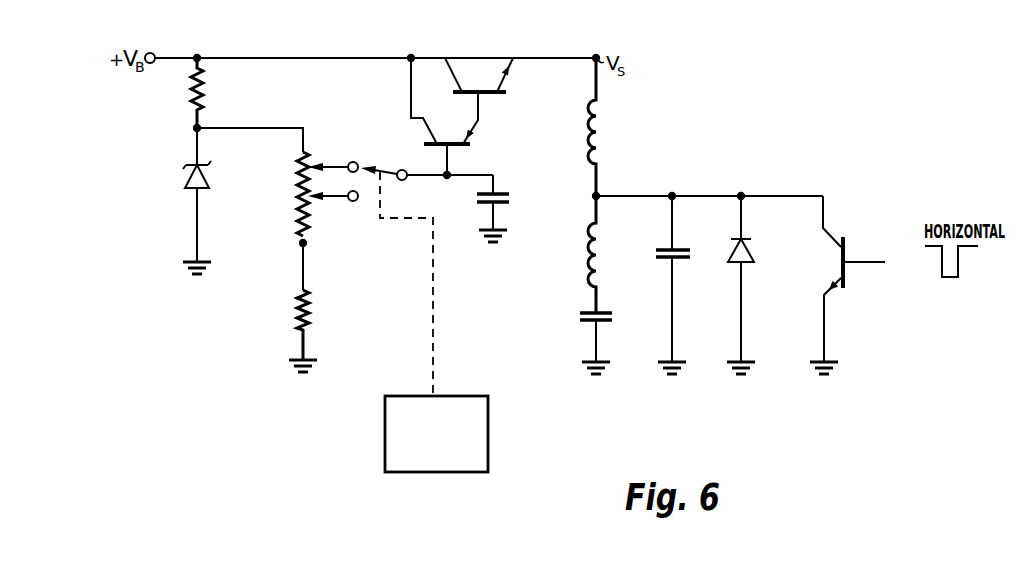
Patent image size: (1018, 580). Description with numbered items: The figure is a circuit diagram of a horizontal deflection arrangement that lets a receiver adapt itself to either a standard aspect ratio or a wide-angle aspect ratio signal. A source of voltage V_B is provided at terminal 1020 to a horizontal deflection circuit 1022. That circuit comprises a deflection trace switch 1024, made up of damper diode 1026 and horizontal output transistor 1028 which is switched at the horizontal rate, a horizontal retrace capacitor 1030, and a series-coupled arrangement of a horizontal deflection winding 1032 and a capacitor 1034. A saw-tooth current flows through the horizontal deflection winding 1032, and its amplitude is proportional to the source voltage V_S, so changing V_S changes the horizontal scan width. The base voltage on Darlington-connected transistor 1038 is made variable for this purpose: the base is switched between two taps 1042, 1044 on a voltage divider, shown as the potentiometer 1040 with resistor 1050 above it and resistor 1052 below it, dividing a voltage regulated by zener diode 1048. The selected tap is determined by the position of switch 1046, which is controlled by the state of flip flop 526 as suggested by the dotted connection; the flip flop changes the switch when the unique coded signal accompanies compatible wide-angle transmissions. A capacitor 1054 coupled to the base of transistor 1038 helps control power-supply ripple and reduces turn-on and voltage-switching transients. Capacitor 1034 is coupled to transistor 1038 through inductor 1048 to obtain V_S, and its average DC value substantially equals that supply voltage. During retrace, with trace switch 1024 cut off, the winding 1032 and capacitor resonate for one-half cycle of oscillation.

The terminal 1020 is at (151, 53).
The resistor 1050 is at (205, 92).
The zener diode / inductor 1048 is at (191, 194).
The potentiometer 1040 is at (297, 209).
The resistor 1052 is at (309, 311).
The tap 1042 is at (337, 163).
The tap 1044 is at (334, 200).
The switch 1046 is at (380, 169).
The Darlington-connected transistor 1038 is at (466, 125).
The capacitor 1054 is at (507, 193).
The horizontal deflection circuit 1022 is at (744, 176).
The horizontal deflection winding 1032 is at (588, 268).
The capacitor 1034 is at (580, 316).
The horizontal retrace capacitor 1030 is at (661, 257).
The damper diode 1026 is at (738, 265).
The deflection trace switch 1024 is at (810, 297).
The horizontal output transistor 1028 is at (829, 231).
The flip flop 526 is at (489, 435).